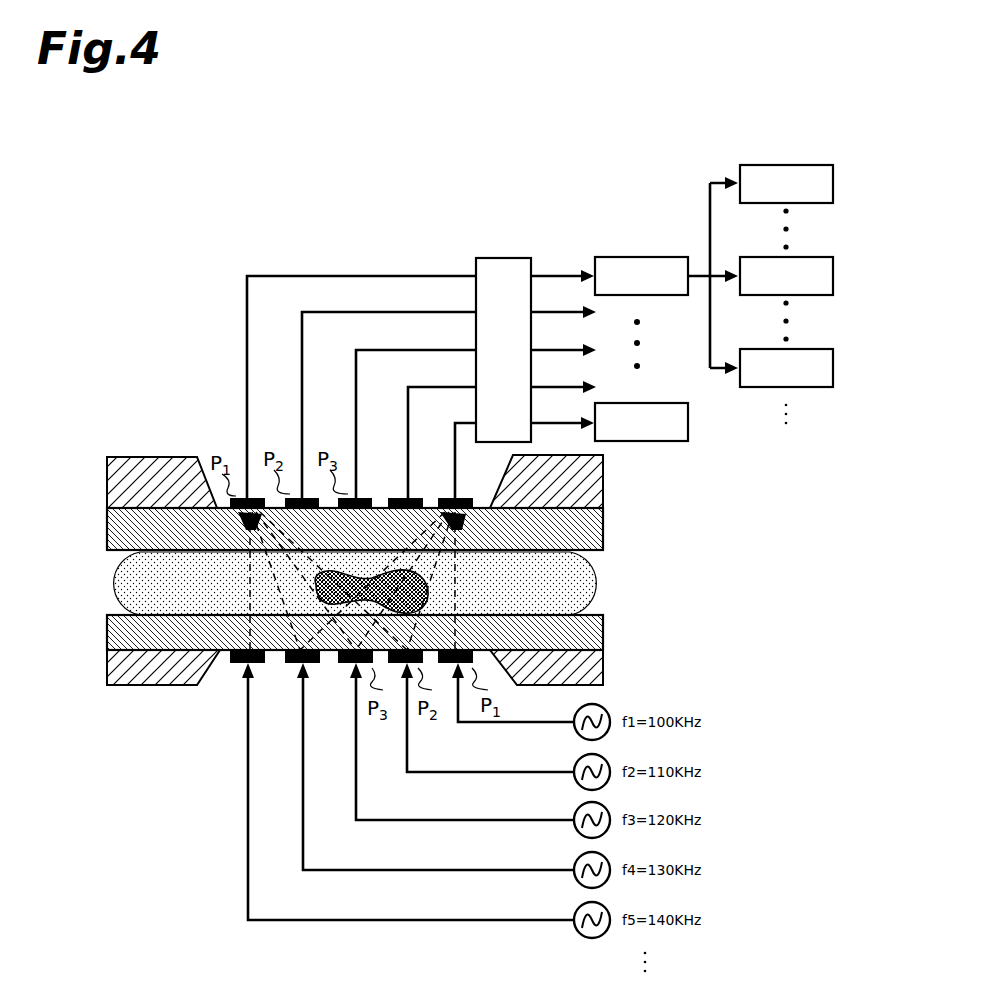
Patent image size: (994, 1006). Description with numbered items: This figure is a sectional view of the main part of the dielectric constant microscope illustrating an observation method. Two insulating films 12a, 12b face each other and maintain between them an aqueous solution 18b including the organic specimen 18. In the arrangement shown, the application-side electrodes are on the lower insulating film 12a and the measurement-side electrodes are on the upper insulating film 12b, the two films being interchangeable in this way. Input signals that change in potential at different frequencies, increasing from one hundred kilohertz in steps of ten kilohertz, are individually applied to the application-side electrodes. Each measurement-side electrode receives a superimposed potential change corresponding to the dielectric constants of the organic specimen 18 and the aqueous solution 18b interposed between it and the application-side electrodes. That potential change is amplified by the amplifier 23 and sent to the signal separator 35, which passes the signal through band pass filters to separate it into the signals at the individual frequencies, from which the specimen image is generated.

The insulating film 12a is at (605, 634).
The insulating film 12b is at (605, 530).
The organic specimen 18 is at (432, 590).
The aqueous solution 18b is at (118, 580).
The amplifier 23 is at (516, 361).
The signal separator 35 is at (606, 212).